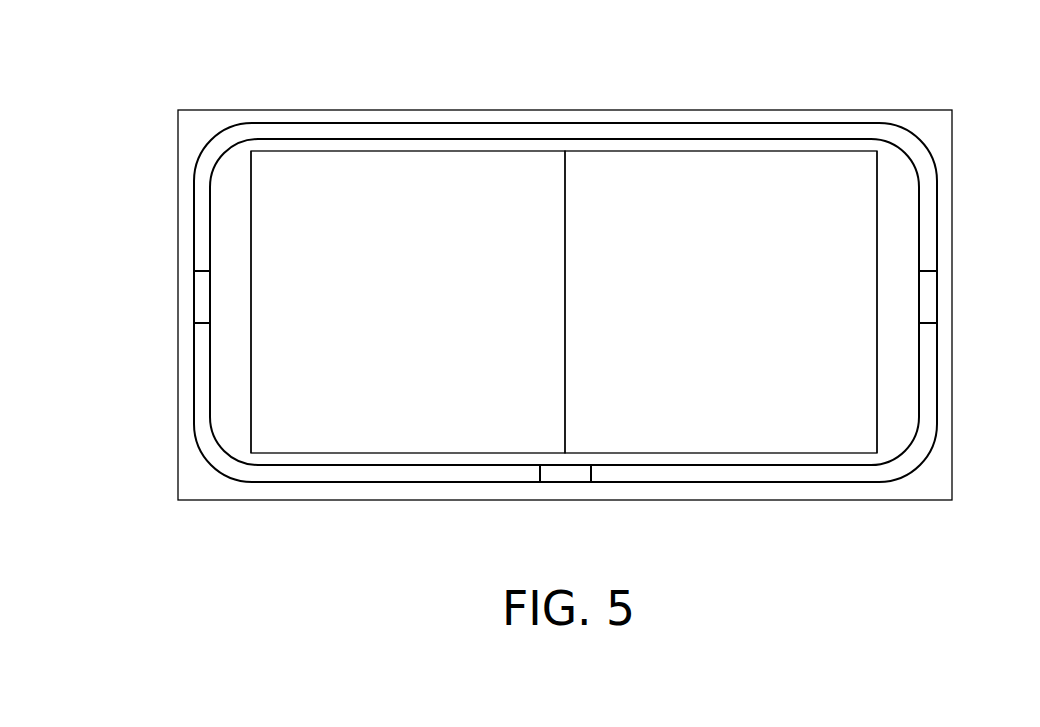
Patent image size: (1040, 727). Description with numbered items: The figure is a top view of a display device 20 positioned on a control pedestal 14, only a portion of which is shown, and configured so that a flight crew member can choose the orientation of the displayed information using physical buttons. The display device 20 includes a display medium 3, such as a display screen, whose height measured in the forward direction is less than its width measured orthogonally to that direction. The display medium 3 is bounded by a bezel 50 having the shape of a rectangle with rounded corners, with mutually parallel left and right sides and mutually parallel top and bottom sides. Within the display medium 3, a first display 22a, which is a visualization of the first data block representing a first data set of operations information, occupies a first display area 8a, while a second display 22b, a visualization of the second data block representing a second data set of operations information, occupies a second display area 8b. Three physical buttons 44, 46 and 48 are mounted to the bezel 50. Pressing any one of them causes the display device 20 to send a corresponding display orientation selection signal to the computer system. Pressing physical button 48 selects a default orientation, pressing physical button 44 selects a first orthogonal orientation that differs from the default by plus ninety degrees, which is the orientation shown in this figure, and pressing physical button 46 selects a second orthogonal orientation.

The display medium 3 is at (557, 303).
The first display area 8a is at (489, 166).
The second display area 8b is at (765, 165).
The control pedestal 14 is at (832, 500).
The display device 20 is at (388, 118).
The first display 22a is at (250, 358).
The second display 22b is at (880, 400).
The physical button 44 is at (197, 296).
The physical button 46 is at (938, 300).
The physical button 48 is at (570, 484).
The bezel 50 is at (368, 484).